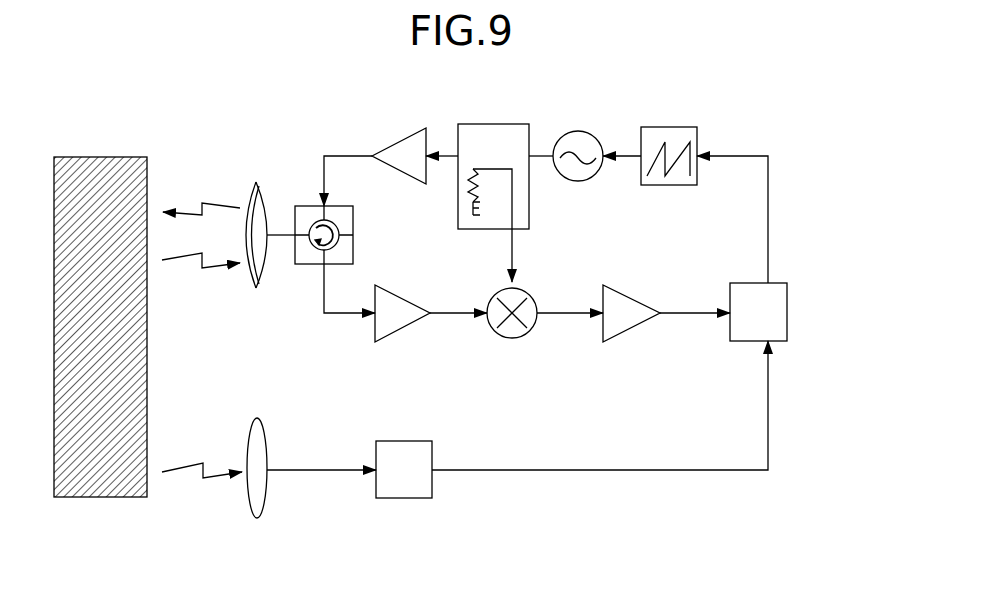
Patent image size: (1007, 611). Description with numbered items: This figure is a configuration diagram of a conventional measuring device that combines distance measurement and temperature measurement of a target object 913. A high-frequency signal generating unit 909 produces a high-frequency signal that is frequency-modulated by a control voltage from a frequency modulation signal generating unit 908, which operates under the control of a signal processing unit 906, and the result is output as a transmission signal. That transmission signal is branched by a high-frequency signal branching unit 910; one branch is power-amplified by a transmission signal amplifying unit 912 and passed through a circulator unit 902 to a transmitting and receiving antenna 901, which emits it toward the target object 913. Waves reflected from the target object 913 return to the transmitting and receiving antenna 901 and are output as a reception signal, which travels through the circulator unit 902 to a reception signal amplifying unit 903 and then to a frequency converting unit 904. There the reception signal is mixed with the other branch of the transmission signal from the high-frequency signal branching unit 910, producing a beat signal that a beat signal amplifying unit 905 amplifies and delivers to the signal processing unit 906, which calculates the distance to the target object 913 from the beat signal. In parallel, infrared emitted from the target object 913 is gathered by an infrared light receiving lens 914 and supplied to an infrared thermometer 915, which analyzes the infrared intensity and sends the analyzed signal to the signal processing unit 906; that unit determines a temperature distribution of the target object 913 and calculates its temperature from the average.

The transmitting and receiving antenna 901 is at (252, 182).
The circulator unit 902 is at (353, 222).
The reception signal amplifying unit 903 is at (407, 330).
The frequency converting unit 904 is at (512, 338).
The beat signal amplifying unit 905 is at (630, 330).
The signal processing unit 906 is at (787, 312).
The frequency modulation signal generating unit 908 is at (670, 127).
The high-frequency signal generating unit 909 is at (578, 131).
The high-frequency signal branching unit 910 is at (492, 124).
The transmission signal amplifying unit 912 is at (397, 142).
The target object 913 is at (100, 157).
The infrared light receiving lens 914 is at (257, 518).
The infrared thermometer 915 is at (404, 498).